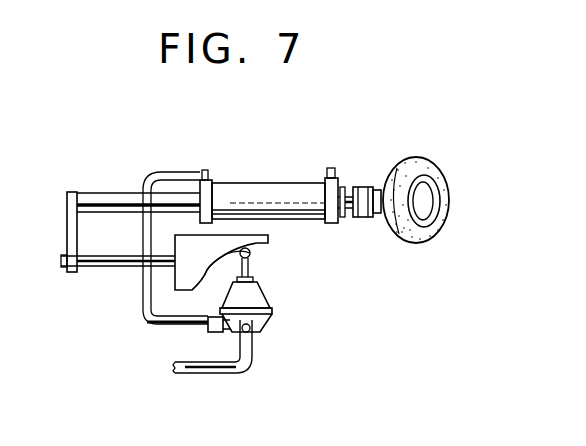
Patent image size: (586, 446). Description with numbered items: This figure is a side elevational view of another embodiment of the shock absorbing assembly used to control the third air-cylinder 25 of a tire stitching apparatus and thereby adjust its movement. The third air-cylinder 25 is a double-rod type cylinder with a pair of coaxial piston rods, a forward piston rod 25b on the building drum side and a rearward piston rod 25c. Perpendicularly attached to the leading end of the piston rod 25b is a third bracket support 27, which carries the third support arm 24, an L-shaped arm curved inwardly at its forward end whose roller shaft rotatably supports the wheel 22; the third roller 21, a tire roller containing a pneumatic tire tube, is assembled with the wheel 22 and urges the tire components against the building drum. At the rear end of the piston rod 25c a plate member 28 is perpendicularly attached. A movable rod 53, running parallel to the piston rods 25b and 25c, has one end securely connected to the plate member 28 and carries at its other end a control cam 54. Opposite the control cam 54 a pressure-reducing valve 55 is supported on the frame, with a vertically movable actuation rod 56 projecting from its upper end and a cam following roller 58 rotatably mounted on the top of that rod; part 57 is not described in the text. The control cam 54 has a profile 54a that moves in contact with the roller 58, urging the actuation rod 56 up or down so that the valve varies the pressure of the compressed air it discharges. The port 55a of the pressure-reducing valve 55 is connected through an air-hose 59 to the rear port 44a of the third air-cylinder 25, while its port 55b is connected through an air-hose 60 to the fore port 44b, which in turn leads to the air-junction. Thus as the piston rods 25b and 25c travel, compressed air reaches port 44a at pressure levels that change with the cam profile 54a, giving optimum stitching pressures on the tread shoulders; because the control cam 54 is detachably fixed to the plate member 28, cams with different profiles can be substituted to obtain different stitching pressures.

The third roller 21 is at (433, 182).
The wheel 22 is at (421, 216).
The third support arm 24 is at (381, 187).
The third air-cylinder 25 is at (273, 193).
The piston rod 25b is at (349, 218).
The piston rod 25c is at (110, 200).
The third bracket support 27 is at (365, 187).
The plate member 28 is at (67, 218).
The port 44a is at (207, 170).
The port 44b is at (328, 170).
The movable rod 53 is at (108, 264).
The control cam 54 is at (267, 237).
The profile 54a is at (195, 282).
The pressure-reducing valve 55 is at (263, 327).
The port 55a is at (212, 332).
The port 55b is at (257, 330).
The actuation rod 56 is at (250, 270).
The cam surface 57 is at (245, 258).
The cam following roller 58 is at (250, 255).
The air-hose 59 is at (175, 173).
The air-hose 60 is at (208, 371).